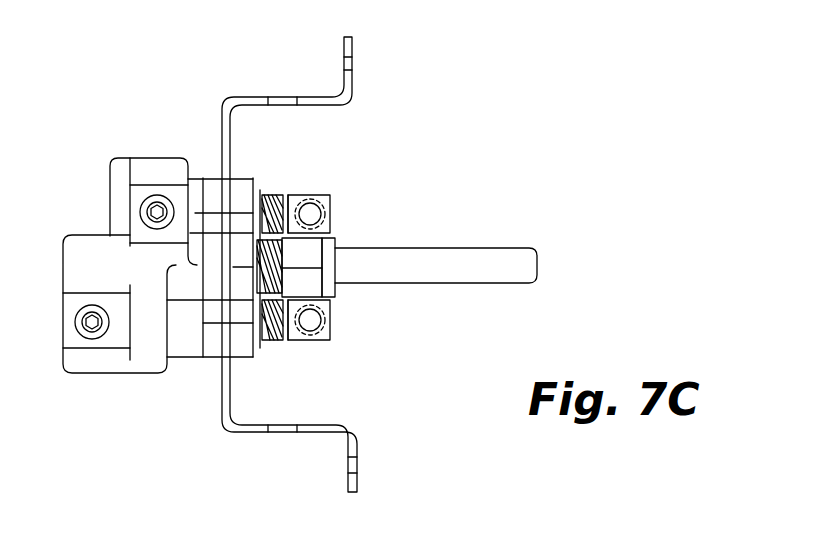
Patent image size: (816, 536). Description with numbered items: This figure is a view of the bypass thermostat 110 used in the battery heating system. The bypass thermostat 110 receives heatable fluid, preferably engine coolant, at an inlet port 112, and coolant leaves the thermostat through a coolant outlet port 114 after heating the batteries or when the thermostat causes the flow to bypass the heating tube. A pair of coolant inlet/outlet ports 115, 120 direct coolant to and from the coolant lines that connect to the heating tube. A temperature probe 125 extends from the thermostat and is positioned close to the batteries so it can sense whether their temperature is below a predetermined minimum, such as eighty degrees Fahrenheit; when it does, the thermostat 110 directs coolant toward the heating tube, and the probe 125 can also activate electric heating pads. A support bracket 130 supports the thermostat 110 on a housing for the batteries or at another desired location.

The bypass thermostat 110 is at (92, 179).
The inlet port 112 is at (102, 348).
The coolant outlet port 114 is at (145, 165).
The coolant inlet/outlet port 115 is at (304, 342).
The coolant inlet/outlet port 120 is at (314, 198).
The temperature probe 125 is at (447, 270).
The support bracket 130 is at (313, 107).